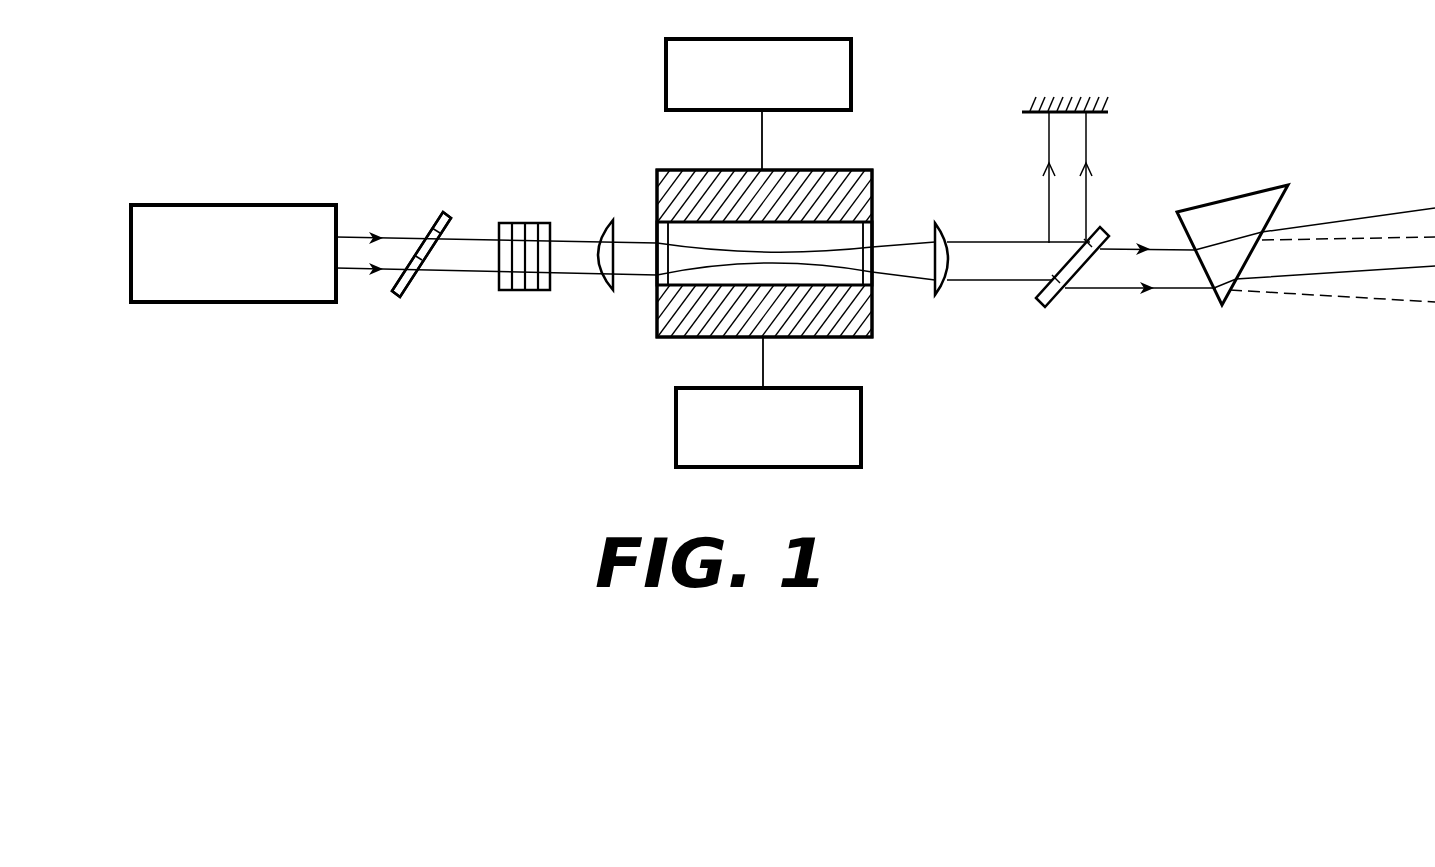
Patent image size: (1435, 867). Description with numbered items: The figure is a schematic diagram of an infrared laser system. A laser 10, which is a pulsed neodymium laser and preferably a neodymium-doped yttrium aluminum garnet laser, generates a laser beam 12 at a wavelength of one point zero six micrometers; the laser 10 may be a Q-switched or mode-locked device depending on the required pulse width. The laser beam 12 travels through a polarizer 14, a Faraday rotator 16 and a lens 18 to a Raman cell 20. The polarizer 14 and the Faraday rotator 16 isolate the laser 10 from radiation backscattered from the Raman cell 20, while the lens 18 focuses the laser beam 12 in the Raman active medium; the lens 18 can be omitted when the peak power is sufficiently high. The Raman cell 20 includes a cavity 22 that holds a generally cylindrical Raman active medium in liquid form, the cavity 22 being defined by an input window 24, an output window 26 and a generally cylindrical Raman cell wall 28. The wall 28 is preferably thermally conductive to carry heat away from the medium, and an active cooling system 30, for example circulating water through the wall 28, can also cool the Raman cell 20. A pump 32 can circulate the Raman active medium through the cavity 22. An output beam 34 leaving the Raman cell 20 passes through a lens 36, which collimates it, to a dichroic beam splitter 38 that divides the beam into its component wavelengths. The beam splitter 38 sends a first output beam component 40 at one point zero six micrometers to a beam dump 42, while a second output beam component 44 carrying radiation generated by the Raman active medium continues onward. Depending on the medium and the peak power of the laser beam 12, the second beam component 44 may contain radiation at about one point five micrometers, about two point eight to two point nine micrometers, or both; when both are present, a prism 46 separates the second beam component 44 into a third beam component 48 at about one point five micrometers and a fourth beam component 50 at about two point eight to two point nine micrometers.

The laser 10 is at (283, 303).
The laser beam 12 is at (398, 237).
The polarizer 14 is at (408, 292).
The Faraday rotator 16 is at (530, 292).
The lens 18 is at (610, 222).
The Raman cell 20 is at (669, 164).
The cavity 22 is at (792, 275).
The input window 24 is at (658, 282).
The output window 26 is at (877, 277).
The Raman cell wall 28 is at (857, 168).
The cooling system 30 is at (676, 417).
The pump 32 is at (666, 63).
The output beam 34 is at (902, 243).
The lens 36 is at (938, 224).
The dichroic beam splitter 38 is at (1050, 300).
The first output beam component 40 is at (1087, 150).
The beam dump 42 is at (1100, 114).
The second output beam component 44 is at (1118, 290).
The prism 46 is at (1257, 197).
The third beam component 48 is at (1333, 300).
The fourth beam component 50 is at (1397, 210).